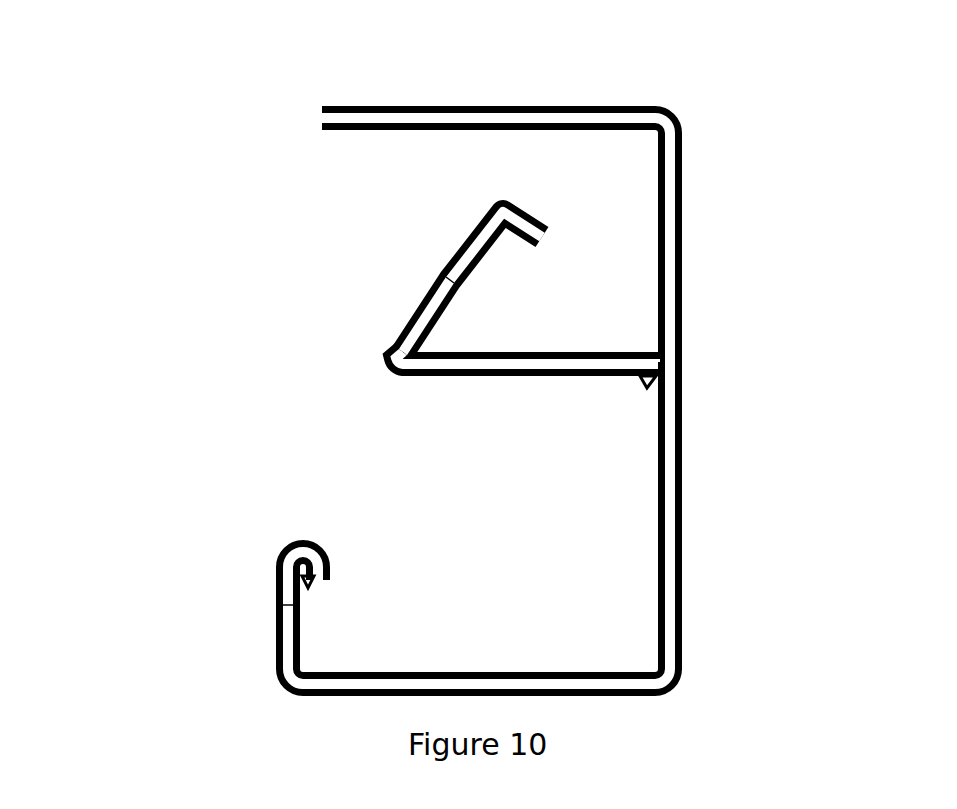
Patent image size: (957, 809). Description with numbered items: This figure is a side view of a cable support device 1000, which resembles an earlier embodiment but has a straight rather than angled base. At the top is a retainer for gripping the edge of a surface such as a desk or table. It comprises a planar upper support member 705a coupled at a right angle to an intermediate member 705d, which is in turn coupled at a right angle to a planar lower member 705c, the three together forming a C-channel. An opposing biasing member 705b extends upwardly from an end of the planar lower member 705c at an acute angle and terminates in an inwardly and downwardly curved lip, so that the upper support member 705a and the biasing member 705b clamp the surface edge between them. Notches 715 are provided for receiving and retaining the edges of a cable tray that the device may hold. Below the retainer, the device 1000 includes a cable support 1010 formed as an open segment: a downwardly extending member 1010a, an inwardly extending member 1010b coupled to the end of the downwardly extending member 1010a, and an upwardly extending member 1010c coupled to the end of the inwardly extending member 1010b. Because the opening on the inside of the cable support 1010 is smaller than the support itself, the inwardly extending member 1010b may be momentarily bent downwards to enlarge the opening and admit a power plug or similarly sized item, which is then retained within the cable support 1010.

The cable support device 1000 is at (409, 360).
The planar upper support member 705a is at (583, 102).
The biasing member 705b is at (430, 273).
The planar lower member 705c is at (557, 350).
The intermediate member 705d is at (686, 212).
The notches 715 is at (645, 400).
The cable support 1010 is at (469, 523).
The downwardly extending member 1010a is at (686, 540).
The inwardly extending member 1010b is at (497, 668).
The upwardly extending member 1010c is at (276, 630).